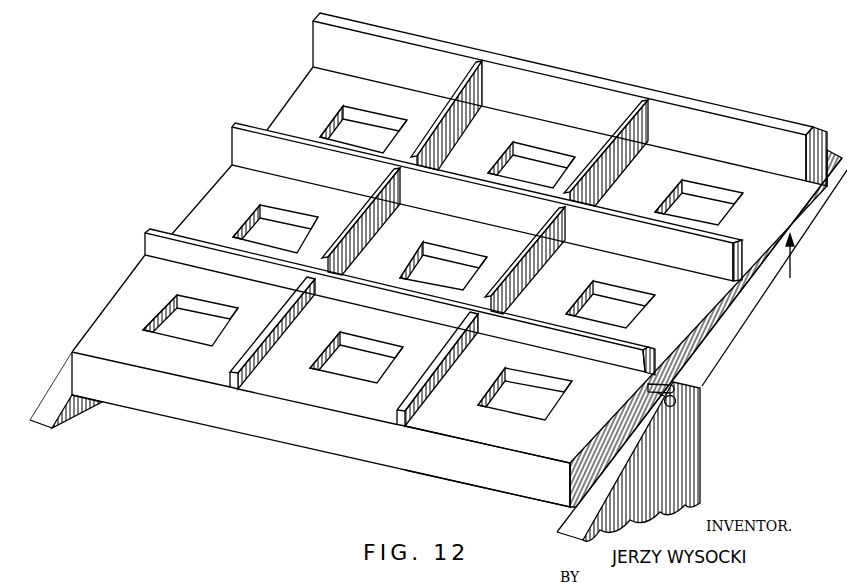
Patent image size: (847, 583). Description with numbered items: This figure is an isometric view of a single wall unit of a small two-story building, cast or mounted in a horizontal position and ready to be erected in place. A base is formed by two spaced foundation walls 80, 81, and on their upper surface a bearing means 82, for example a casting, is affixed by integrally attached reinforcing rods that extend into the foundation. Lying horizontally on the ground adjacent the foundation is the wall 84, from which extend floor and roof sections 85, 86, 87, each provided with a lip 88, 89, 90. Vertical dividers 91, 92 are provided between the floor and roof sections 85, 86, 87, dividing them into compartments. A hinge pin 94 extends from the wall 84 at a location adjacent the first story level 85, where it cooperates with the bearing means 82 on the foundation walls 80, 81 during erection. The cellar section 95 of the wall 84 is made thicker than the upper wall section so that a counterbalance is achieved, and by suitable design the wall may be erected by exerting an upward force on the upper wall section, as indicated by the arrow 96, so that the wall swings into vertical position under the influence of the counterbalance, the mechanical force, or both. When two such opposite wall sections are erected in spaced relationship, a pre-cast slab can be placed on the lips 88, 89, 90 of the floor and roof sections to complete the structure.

The foundation wall 80 is at (673, 467).
The foundation wall 81 is at (72, 408).
The bearing means 82 is at (665, 401).
The wall 84 is at (736, 307).
The floor section 85 is at (652, 353).
The floor section 86 is at (740, 250).
The roof section 87 is at (830, 132).
The lip 88 is at (637, 337).
The lip 89 is at (625, 213).
The lip 90 is at (757, 114).
The vertical divider 91 is at (635, 131).
The vertical divider 92 is at (463, 94).
The hinge pin 94 is at (675, 378).
The cellar section 95 is at (525, 442).
The arrow 96 is at (790, 252).